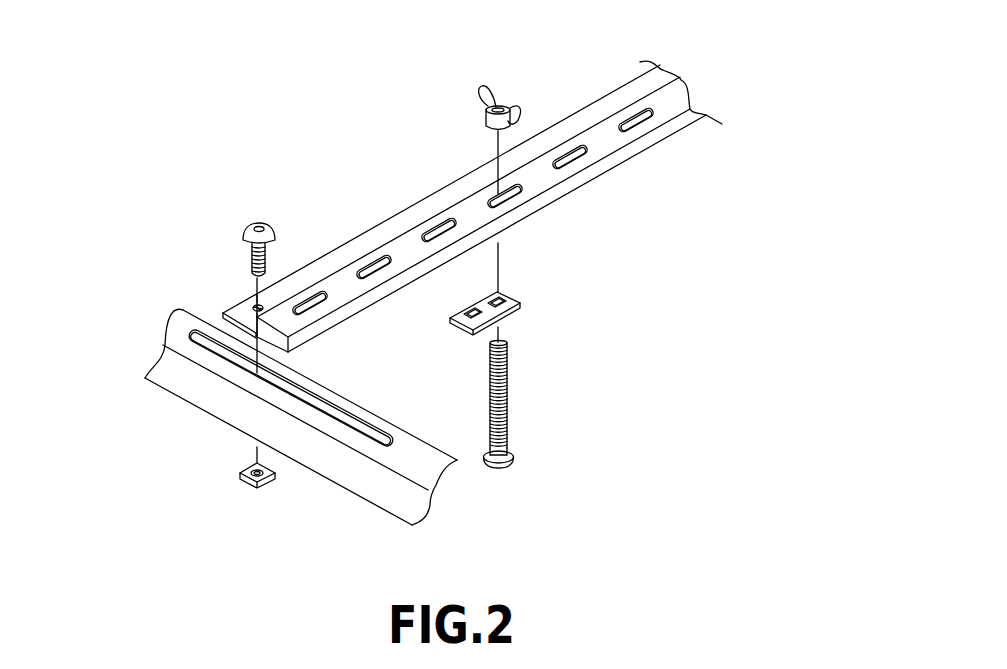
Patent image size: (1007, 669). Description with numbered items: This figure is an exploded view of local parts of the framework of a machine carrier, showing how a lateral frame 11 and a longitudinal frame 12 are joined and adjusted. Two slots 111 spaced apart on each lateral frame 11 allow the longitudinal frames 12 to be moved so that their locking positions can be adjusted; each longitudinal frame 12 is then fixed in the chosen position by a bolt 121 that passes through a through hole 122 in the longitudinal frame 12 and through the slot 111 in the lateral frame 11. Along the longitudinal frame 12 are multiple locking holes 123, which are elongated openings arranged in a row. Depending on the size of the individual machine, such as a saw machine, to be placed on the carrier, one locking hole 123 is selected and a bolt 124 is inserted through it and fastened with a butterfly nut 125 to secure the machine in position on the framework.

The lateral frame 11 is at (330, 467).
The slot 111 is at (227, 353).
The longitudinal frame 12 is at (570, 123).
The bolt 121 is at (267, 217).
The through hole 122 is at (250, 308).
The locking hole 123 is at (648, 125).
The bolt 124 is at (507, 378).
The butterfly nut 125 is at (490, 119).